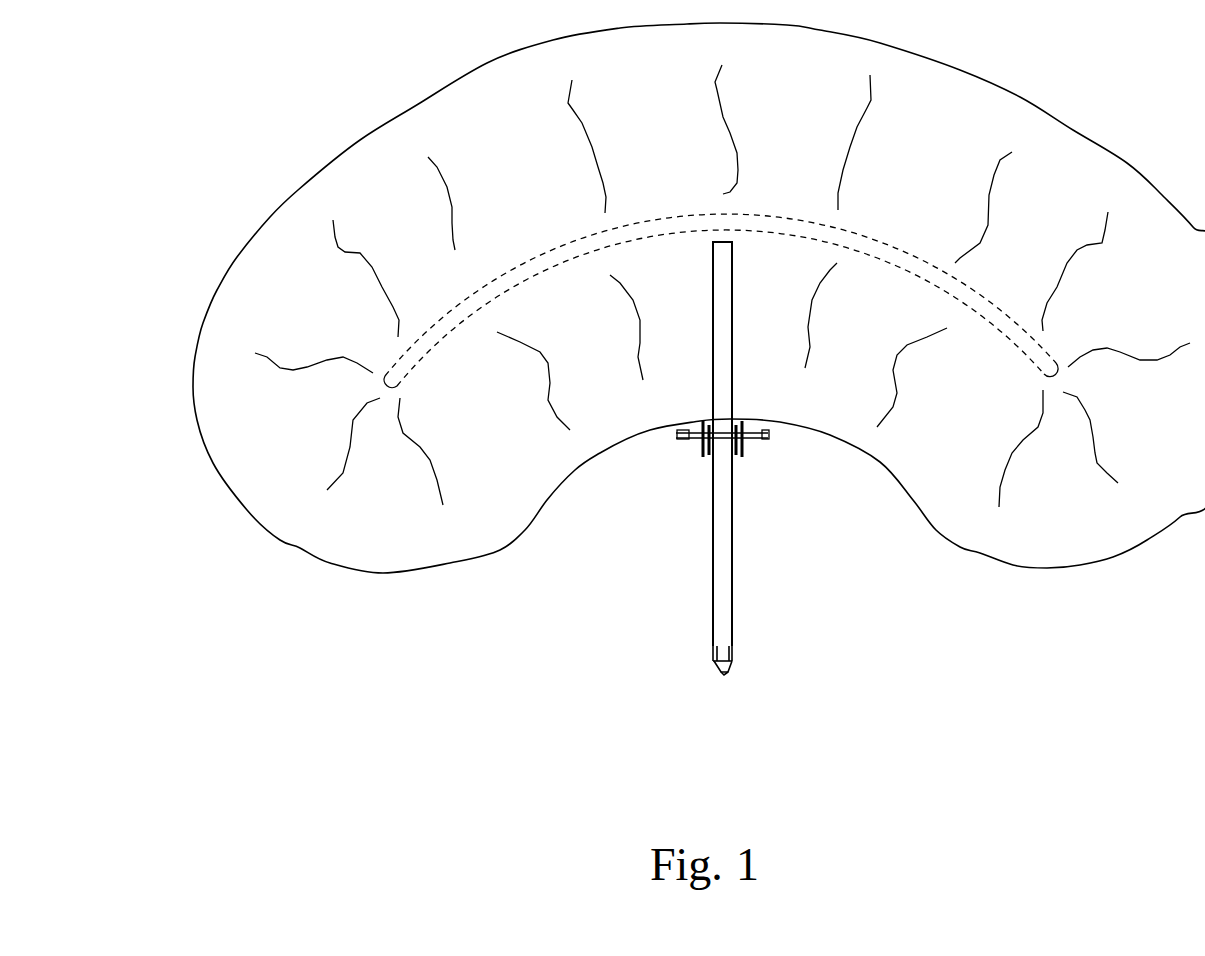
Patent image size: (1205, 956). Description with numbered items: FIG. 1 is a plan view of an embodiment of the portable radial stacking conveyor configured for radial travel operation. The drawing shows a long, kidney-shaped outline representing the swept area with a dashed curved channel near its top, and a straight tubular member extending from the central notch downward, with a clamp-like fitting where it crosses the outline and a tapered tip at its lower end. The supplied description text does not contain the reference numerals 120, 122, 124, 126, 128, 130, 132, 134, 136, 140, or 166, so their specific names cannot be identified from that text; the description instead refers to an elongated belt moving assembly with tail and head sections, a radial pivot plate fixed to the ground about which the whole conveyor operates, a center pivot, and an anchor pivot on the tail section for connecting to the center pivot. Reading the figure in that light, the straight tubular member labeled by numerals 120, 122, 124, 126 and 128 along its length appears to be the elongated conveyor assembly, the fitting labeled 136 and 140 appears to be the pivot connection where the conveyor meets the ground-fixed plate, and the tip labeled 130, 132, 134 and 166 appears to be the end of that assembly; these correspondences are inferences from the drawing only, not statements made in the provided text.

The tubular probe body 120 is at (733, 510).
The outer sheath 122 is at (730, 587).
The distal tube section 124 is at (733, 628).
The proximal end of probe 126 is at (731, 289).
The probe shaft 128 is at (731, 330).
The tip member 130 is at (728, 678).
The tip collar 132 is at (754, 709).
The tapered tip 134 is at (754, 722).
The probe wall 136 is at (712, 394).
The clamp assembly 140 is at (757, 432).
The tip point 166 is at (721, 678).